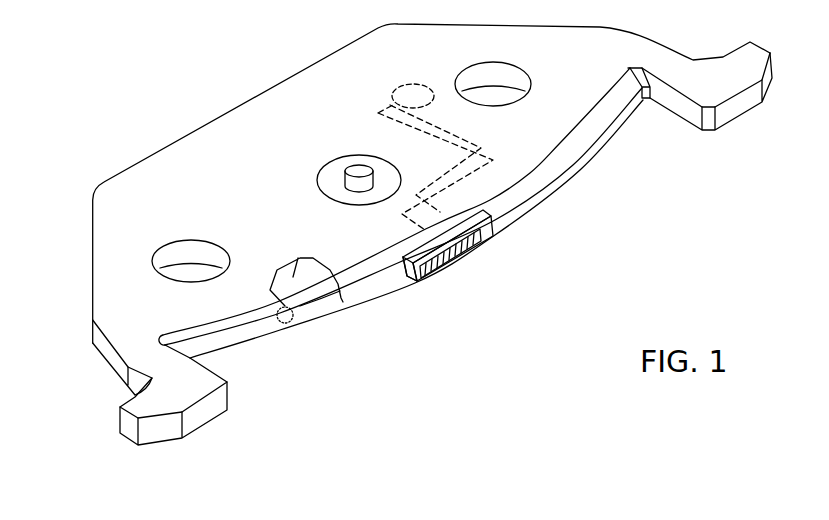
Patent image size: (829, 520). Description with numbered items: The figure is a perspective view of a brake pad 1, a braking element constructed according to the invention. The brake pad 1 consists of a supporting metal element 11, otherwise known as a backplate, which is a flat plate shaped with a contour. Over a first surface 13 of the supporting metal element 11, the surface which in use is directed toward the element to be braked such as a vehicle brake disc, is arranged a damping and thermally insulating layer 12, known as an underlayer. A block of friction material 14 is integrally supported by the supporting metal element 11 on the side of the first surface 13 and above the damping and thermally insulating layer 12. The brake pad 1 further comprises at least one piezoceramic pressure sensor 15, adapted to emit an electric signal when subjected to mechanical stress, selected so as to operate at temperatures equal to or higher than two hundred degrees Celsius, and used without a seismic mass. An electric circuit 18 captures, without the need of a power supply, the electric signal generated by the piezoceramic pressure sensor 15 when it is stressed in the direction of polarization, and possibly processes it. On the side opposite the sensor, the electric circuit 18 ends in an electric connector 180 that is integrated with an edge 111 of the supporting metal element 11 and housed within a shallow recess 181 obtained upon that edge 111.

The brake pad 1 is at (134, 80).
The supporting metal element 11 is at (614, 132).
The edge 111 is at (579, 165).
The damping and thermally insulating layer 12 is at (322, 306).
The first surface 13 is at (300, 313).
The block of friction material 14 is at (296, 262).
The piezoceramic pressure sensor 15 is at (392, 84).
The electric circuit 18 is at (468, 152).
The electric connector 180 is at (478, 250).
The shallow recess 181 is at (424, 288).